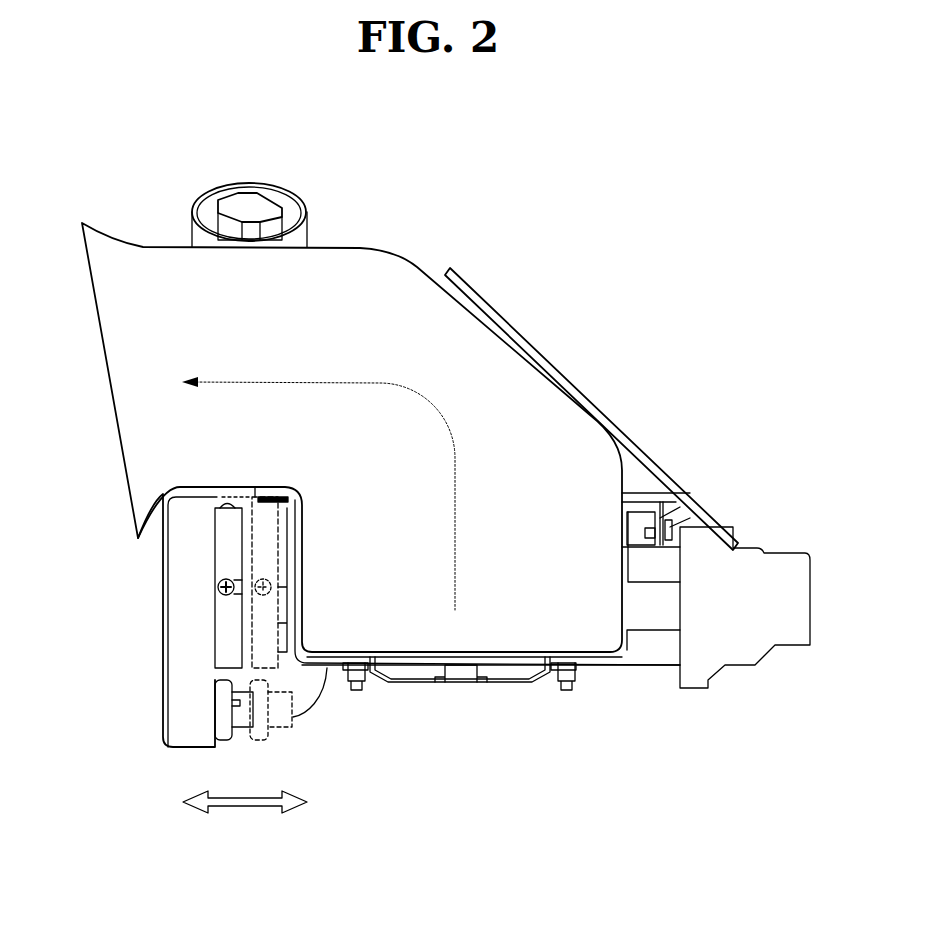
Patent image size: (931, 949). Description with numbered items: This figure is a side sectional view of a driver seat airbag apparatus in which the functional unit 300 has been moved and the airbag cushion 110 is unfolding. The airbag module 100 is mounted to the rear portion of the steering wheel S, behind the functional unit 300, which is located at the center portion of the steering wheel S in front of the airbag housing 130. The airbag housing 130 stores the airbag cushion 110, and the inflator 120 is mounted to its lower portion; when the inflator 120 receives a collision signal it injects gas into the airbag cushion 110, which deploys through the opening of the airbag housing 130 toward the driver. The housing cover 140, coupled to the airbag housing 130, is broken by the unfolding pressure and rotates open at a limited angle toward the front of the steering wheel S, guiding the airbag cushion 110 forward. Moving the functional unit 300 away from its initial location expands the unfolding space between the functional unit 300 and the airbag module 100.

The steering wheel S is at (268, 198).
The airbag module 100 is at (523, 332).
The airbag cushion 110 is at (357, 275).
The inflator 120 is at (507, 668).
The airbag housing 130 is at (597, 662).
The housing cover 140 is at (610, 420).
The functional unit 300 is at (190, 645).